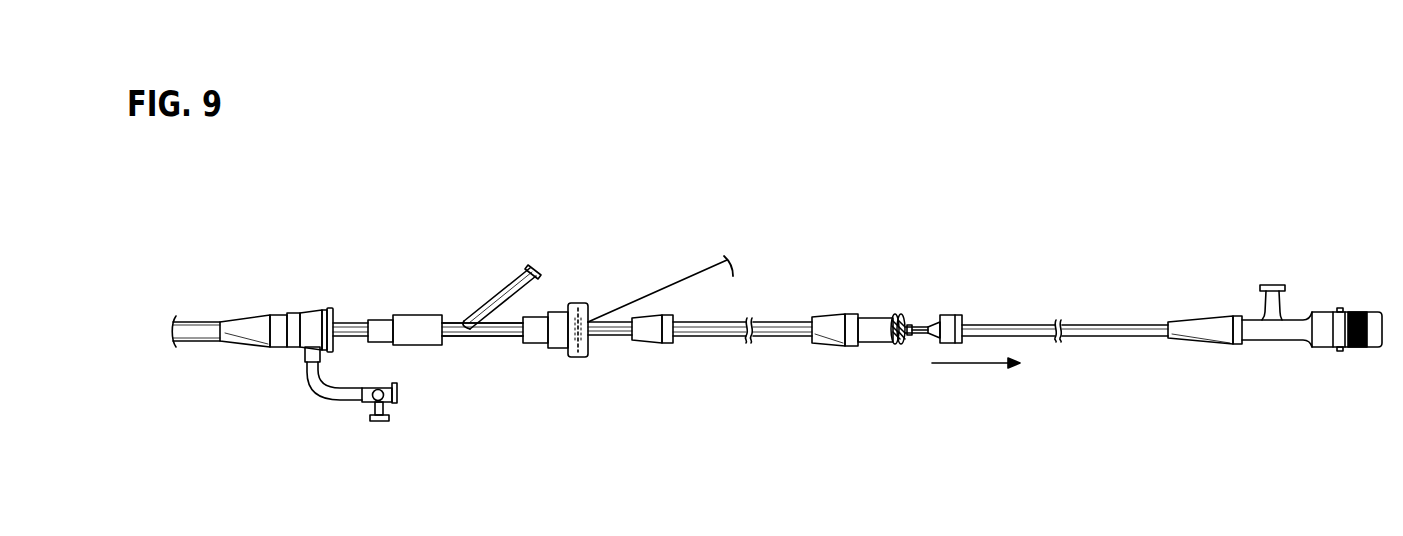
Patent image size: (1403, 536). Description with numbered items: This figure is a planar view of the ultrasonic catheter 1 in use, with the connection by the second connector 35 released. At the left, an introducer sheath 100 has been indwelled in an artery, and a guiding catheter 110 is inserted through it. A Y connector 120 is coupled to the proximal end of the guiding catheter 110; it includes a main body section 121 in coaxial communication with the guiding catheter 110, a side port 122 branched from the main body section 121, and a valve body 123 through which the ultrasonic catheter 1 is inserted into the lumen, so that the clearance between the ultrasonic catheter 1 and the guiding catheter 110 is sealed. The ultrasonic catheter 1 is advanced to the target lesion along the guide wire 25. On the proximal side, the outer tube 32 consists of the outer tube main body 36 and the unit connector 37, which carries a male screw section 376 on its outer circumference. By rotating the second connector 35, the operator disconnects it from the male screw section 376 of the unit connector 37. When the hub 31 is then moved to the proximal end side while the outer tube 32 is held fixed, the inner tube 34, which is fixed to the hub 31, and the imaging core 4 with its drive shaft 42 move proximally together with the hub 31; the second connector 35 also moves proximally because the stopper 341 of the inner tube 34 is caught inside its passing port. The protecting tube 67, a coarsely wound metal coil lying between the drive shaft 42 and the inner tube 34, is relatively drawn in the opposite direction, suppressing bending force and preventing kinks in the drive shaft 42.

The ultrasonic catheter 1 is at (796, 353).
The introducer sheath 100 is at (232, 325).
The guiding catheter 110 is at (360, 322).
The Y connector 120 is at (587, 208).
The main body section 121 is at (455, 324).
The side port 122 is at (498, 302).
The valve body 123 is at (577, 300).
The guide wire 25 is at (667, 287).
The outer tube 32 is at (880, 245).
The outer tube main body 36 is at (790, 322).
The unit connector 37 is at (877, 320).
The male screw section 376 is at (895, 343).
The protecting tube 67 is at (910, 338).
The imaging core 4 is at (917, 325).
The drive shaft 42 is at (927, 334).
The stopper 341 is at (930, 322).
The second connector 35 is at (954, 314).
The inner tube 34 is at (1012, 325).
The hub 31 is at (1325, 320).